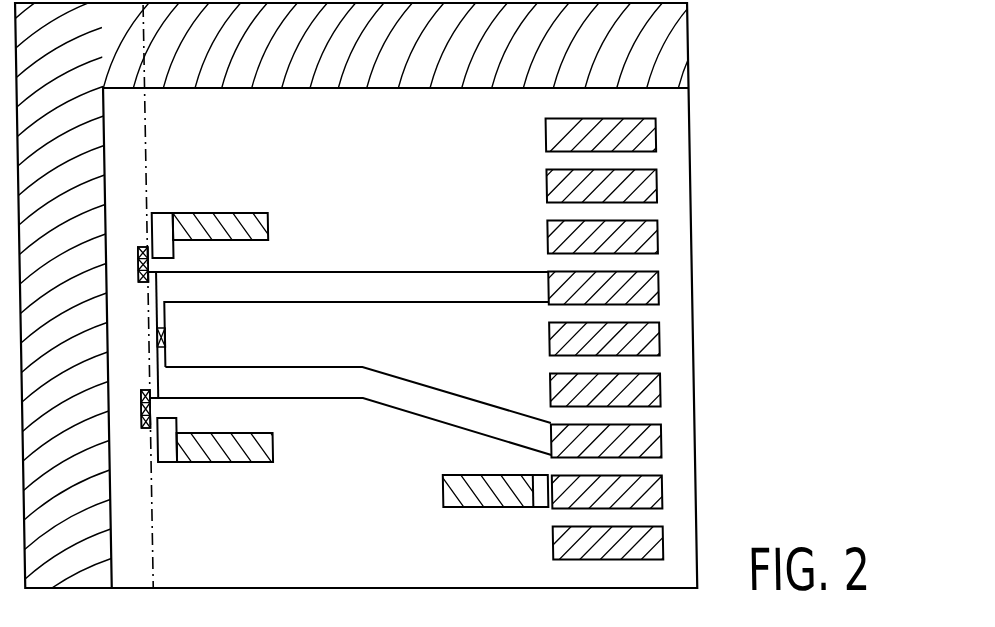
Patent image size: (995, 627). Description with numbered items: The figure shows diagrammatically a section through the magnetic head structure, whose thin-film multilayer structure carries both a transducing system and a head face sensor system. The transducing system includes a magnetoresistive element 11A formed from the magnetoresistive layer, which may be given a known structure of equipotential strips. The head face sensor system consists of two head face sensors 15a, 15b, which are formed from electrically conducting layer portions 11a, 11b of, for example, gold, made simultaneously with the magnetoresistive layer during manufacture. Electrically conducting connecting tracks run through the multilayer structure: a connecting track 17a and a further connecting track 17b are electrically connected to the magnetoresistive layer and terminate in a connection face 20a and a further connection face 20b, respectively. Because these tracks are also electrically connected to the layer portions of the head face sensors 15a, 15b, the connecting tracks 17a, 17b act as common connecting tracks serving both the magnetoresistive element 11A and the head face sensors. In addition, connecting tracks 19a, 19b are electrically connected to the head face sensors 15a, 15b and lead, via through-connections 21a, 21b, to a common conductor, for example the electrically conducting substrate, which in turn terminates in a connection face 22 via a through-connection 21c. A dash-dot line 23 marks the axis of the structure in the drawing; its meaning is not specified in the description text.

The electrically conducting layer portion 11a is at (144, 270).
The electrically conducting layer portion 11b is at (143, 412).
The magnetoresistive element 11A is at (159, 337).
The head face sensor 15a is at (134, 262).
The head face sensor 15b is at (134, 415).
The connecting track 17a is at (355, 290).
The further connecting track 17b is at (393, 385).
The connecting track 19a is at (159, 222).
The connecting track 19b is at (159, 458).
The connection face 20a is at (645, 292).
The further connection face 20b is at (637, 443).
The through-connection 21a is at (233, 222).
The through-connection 21b is at (230, 453).
The through-connection 21c is at (486, 495).
The connection face 22 is at (636, 493).
The center line 23 is at (143, 108).